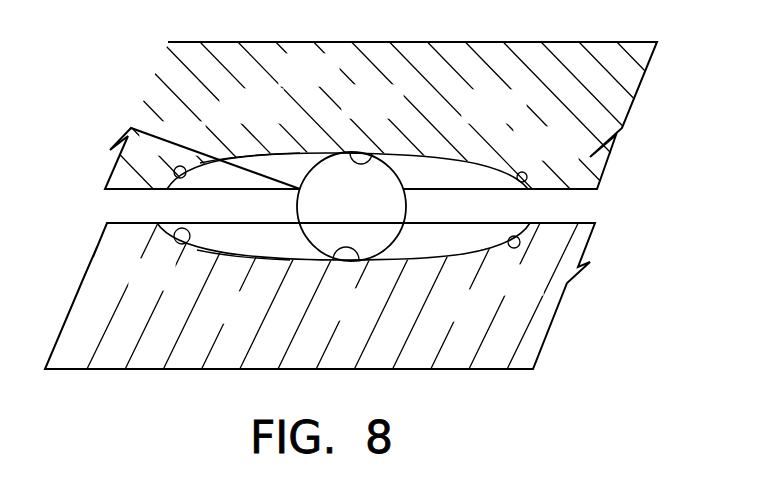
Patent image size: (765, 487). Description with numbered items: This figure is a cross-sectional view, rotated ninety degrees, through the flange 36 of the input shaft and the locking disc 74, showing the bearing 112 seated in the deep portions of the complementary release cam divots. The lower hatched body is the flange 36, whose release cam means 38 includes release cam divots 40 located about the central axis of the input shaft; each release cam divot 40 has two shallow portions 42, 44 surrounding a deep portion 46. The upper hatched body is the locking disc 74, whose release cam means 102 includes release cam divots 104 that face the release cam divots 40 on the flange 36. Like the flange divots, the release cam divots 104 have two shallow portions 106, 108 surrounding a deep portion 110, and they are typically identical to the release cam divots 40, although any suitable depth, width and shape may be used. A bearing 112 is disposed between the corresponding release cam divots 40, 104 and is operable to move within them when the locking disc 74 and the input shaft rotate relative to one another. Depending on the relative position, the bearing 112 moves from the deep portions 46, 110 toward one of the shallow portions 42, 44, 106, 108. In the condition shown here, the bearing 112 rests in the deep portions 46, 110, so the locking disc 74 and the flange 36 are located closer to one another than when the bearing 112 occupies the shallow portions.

The locking disc 74 is at (598, 98).
The flange 36 is at (535, 327).
The release cam means 102 is at (447, 154).
The release cam divots 104 is at (256, 140).
The shallow portion 106 is at (179, 166).
The shallow portion 108 is at (522, 172).
The deep portion 110 is at (372, 152).
The bearing 112 is at (327, 185).
The release cam means 38 is at (444, 260).
The release cam divots 40 is at (263, 265).
The shallow portion 42 is at (179, 244).
The shallow portion 44 is at (517, 248).
The deep portion 46 is at (336, 262).